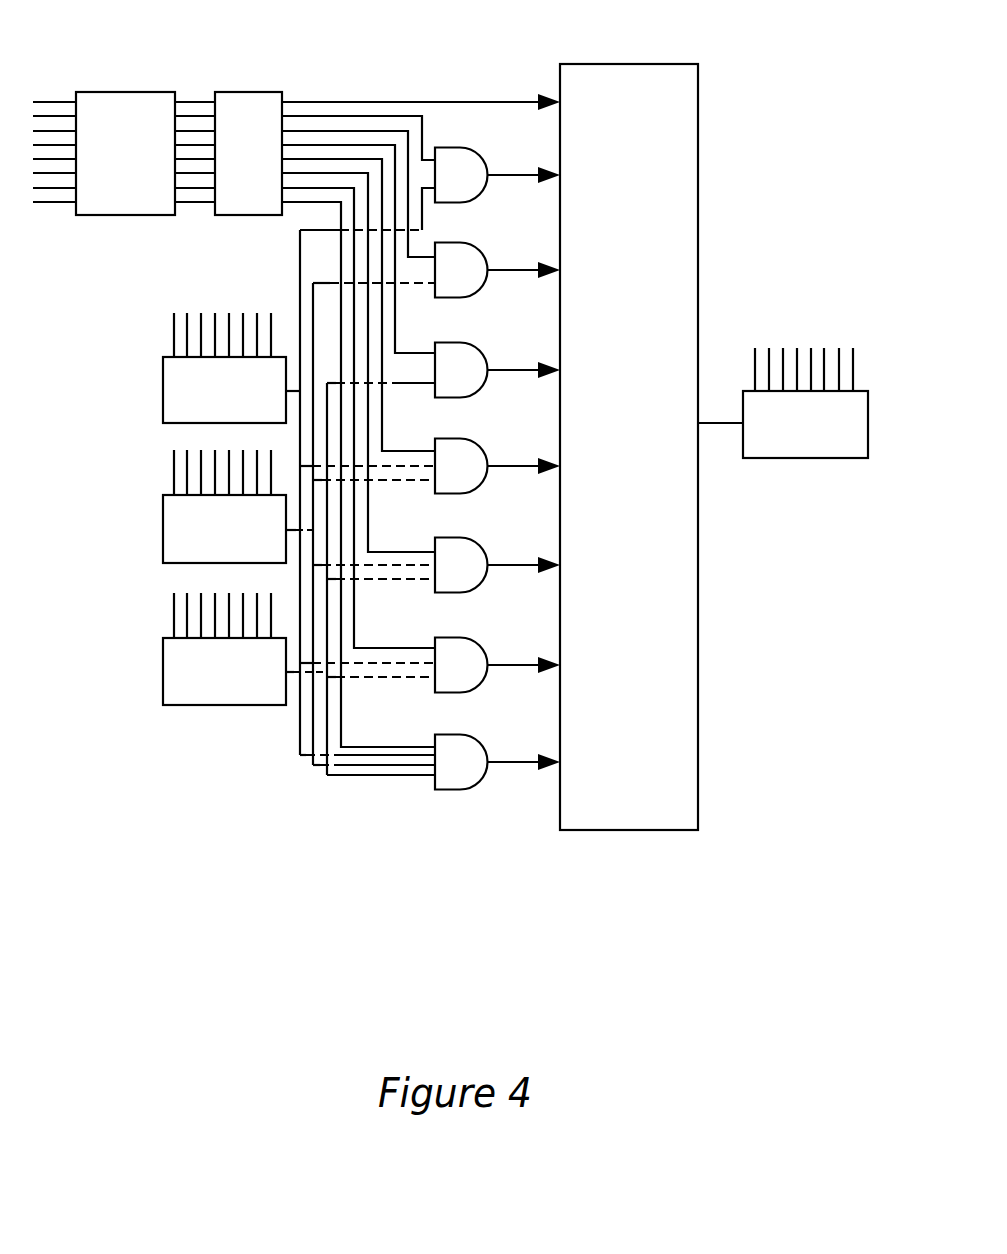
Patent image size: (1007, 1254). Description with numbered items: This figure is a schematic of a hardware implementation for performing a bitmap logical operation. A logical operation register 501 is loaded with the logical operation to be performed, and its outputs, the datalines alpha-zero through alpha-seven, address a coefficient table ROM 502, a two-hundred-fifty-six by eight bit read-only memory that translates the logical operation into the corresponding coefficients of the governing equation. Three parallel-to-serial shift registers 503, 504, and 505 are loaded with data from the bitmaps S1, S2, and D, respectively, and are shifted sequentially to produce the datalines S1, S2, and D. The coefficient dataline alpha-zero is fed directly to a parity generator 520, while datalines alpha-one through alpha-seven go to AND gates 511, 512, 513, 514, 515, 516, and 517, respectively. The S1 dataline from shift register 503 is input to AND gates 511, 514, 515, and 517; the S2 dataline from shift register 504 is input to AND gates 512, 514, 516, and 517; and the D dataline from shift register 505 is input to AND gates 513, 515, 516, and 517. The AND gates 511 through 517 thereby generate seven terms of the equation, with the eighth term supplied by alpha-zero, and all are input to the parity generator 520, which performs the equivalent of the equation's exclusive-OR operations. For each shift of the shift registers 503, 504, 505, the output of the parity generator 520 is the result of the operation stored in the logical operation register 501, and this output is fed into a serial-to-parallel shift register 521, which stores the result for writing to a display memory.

The logical operation register 501 is at (92, 92).
The coefficient table read-only memory (ROM) 502 is at (250, 63).
The parallel-to-serial shift register 503 is at (163, 380).
The parallel-to-serial shift register 504 is at (163, 518).
The parallel-to-serial shift register 505 is at (163, 661).
The AND gate 511 is at (497, 166).
The AND gate 512 is at (497, 263).
The AND gate 513 is at (497, 362).
The AND gate 514 is at (497, 459).
The AND gate 515 is at (497, 557).
The AND gate 516 is at (497, 657).
The AND gate 517 is at (497, 754).
The parity generator 520 is at (630, 64).
The serial-to-parallel shift register 521 is at (868, 408).